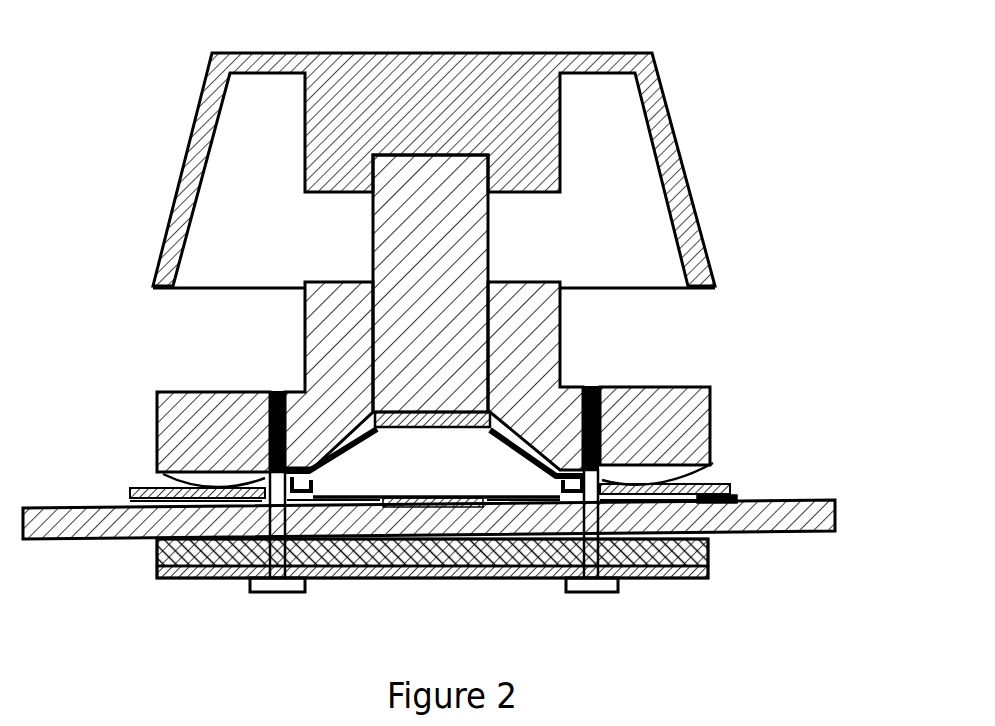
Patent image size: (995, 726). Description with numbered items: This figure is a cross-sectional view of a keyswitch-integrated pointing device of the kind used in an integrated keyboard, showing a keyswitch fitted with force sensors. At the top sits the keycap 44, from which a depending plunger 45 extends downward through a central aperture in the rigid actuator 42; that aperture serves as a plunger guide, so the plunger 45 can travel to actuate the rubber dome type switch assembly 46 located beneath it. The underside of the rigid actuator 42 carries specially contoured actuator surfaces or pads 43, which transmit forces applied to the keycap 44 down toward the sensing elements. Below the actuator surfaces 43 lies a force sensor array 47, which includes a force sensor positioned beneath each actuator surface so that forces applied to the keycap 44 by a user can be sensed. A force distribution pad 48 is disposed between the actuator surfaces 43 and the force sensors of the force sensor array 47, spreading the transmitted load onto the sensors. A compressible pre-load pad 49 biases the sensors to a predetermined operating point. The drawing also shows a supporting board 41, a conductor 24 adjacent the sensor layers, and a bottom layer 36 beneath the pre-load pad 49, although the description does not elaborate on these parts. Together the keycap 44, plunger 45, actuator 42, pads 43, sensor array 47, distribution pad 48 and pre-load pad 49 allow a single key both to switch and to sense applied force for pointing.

The keycap 44 is at (618, 52).
The plunger 45 is at (458, 207).
The rigid actuator 42 is at (540, 325).
The rubber dome type switch assembly 46 is at (547, 463).
The force distribution pad 48 is at (160, 490).
The force sensor array 47 is at (258, 500).
The actuator surfaces 43 is at (713, 463).
The conductor 24 is at (727, 498).
The circuit board 41 is at (757, 525).
The compressible pre-load pad 49 is at (710, 550).
The bottom layer 36 is at (158, 573).